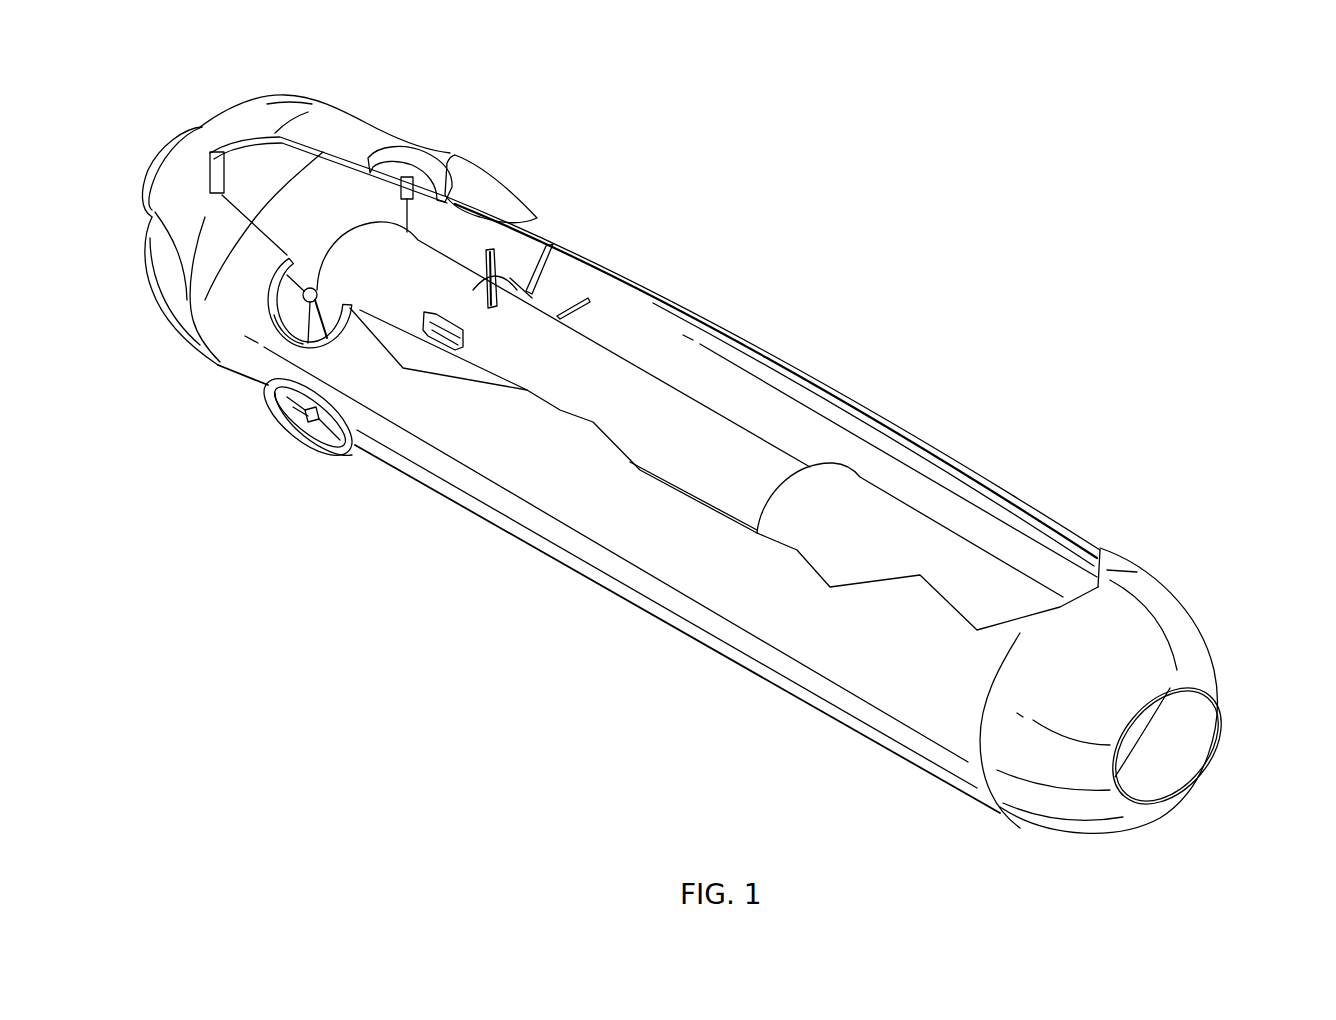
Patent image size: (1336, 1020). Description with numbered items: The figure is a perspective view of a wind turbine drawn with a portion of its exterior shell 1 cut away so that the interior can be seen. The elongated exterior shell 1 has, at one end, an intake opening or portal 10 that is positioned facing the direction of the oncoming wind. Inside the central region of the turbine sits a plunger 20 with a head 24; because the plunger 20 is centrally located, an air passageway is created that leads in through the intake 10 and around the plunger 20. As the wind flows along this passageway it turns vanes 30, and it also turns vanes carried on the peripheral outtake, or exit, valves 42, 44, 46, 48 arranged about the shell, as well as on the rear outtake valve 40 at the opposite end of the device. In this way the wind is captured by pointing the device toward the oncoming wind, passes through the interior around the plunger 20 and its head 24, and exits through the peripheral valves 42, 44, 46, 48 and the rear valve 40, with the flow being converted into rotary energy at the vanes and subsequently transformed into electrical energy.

The exterior shell 1 is at (553, 543).
The intake opening 10 is at (1140, 737).
The plunger 20 is at (617, 392).
The head 24 is at (905, 540).
The vanes 30 is at (557, 260).
The rear outtake valve 40 is at (152, 168).
The peripheral outtake valve 42 is at (278, 307).
The peripheral outtake valve 44 is at (317, 438).
The peripheral outtake valve 46 is at (483, 180).
The peripheral outtake valve 48 is at (422, 157).